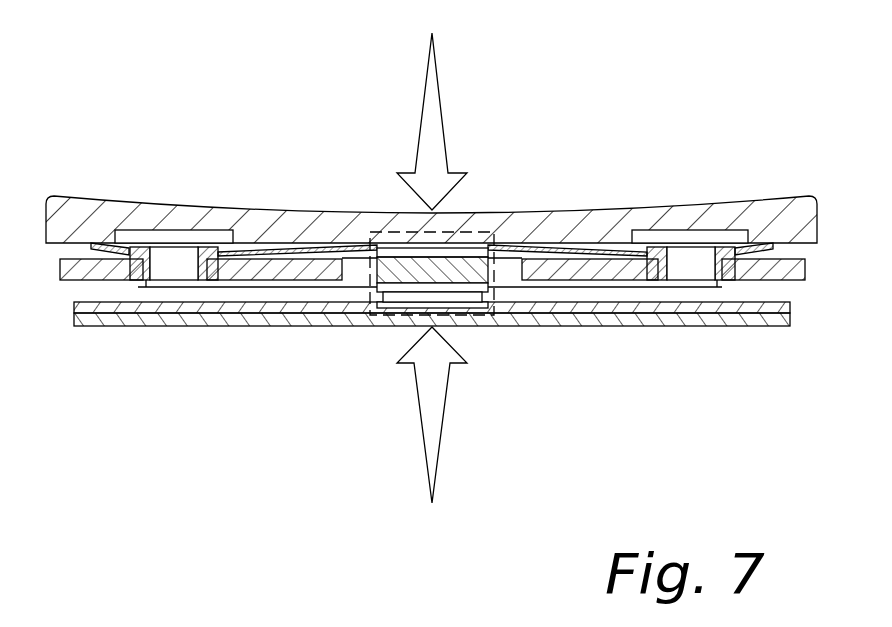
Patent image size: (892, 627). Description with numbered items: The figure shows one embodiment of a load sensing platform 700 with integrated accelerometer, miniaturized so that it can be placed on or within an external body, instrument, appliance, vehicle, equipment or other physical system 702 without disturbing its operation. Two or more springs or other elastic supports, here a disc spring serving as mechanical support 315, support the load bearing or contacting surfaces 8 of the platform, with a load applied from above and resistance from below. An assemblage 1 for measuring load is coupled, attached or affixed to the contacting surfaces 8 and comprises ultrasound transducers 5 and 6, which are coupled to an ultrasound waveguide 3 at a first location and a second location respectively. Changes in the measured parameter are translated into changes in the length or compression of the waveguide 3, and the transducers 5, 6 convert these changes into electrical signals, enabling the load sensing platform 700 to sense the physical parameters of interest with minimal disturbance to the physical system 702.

The load sensing platform 700 is at (675, 491).
The physical system 702 is at (594, 88).
The contacting surface 8 is at (197, 207).
The mechanical support 315 is at (597, 248).
The assemblage 1 is at (370, 268).
The transducer 6 is at (473, 252).
The ultrasound waveguide 3 is at (405, 288).
The transducer 5 is at (465, 305).